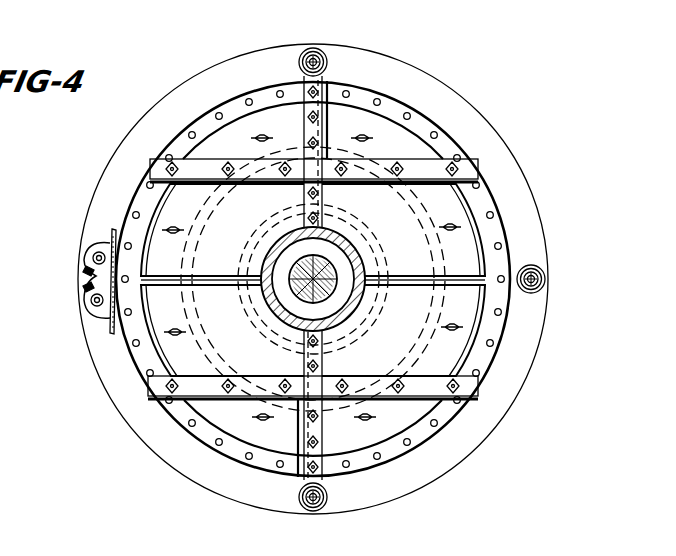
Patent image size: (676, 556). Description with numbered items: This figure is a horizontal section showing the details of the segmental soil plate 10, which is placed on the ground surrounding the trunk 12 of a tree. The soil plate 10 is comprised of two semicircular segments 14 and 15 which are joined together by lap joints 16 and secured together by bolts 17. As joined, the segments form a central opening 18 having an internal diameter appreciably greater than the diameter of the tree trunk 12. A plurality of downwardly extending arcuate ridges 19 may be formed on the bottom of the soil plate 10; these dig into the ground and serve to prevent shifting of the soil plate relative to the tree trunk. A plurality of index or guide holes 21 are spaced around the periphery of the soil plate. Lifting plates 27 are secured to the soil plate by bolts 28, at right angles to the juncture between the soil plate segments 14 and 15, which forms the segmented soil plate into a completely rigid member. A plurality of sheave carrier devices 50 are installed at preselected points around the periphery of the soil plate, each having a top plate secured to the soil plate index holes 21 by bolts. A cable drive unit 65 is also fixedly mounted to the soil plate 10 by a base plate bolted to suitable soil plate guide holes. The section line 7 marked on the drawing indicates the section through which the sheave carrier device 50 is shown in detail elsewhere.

The segmental soil plate 10 is at (500, 190).
The trunk 12 is at (334, 269).
The semicircular segment 14 is at (163, 220).
The semicircular segment 15 is at (460, 355).
The lap joint 16 is at (304, 129).
The bolt 17 is at (308, 417).
The central opening 18 is at (342, 303).
The arcuate ridge 19 is at (212, 204).
The index hole 21 is at (216, 113).
The lifting plate 27 is at (349, 182).
The bolt 28 is at (386, 184).
The sheave carrier device 50 is at (317, 48).
The cable drive unit 65 is at (100, 308).
The section line 7- 7 is at (440, 277).